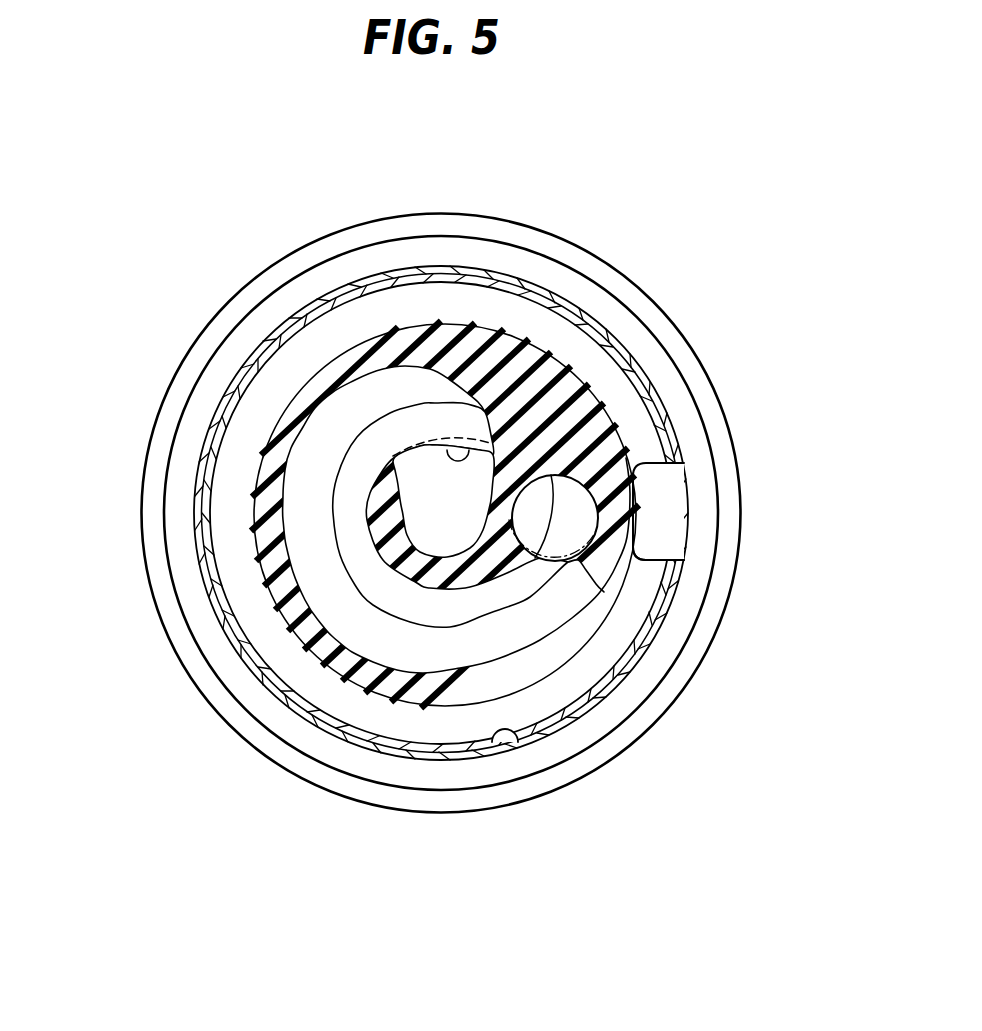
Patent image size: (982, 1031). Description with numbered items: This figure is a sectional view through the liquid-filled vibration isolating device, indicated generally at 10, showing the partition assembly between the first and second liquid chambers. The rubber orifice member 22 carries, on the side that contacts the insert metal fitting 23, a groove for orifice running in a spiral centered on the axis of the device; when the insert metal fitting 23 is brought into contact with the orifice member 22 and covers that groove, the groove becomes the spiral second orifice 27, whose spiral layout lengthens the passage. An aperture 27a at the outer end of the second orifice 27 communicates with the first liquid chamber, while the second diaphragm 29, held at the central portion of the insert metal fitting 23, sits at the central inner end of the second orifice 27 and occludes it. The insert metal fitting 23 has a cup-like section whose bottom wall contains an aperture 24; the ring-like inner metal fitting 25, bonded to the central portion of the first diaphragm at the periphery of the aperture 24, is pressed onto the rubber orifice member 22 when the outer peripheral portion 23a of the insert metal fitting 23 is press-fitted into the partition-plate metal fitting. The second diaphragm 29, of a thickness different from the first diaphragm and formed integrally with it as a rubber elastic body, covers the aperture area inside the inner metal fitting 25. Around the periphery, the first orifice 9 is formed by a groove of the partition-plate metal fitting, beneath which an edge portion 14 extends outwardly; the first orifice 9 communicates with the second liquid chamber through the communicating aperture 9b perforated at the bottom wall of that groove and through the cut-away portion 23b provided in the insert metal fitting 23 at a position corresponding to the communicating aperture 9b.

The scroll fluid machine assembly 10 is at (600, 207).
The first orifice 9 is at (654, 358).
The communicating aperture 9b is at (687, 500).
The edge portion 14 is at (655, 715).
The rubber orifice member 22 is at (318, 643).
The insert metal fitting 23 is at (393, 637).
The outer peripheral portion 23a is at (520, 748).
The cut-away portion 23b is at (650, 560).
The aperture 24 is at (541, 466).
The inner metal fitting 25 is at (345, 502).
The second orifice 27 is at (348, 423).
The aperture 27a is at (588, 574).
The second diaphragm 29 is at (413, 512).